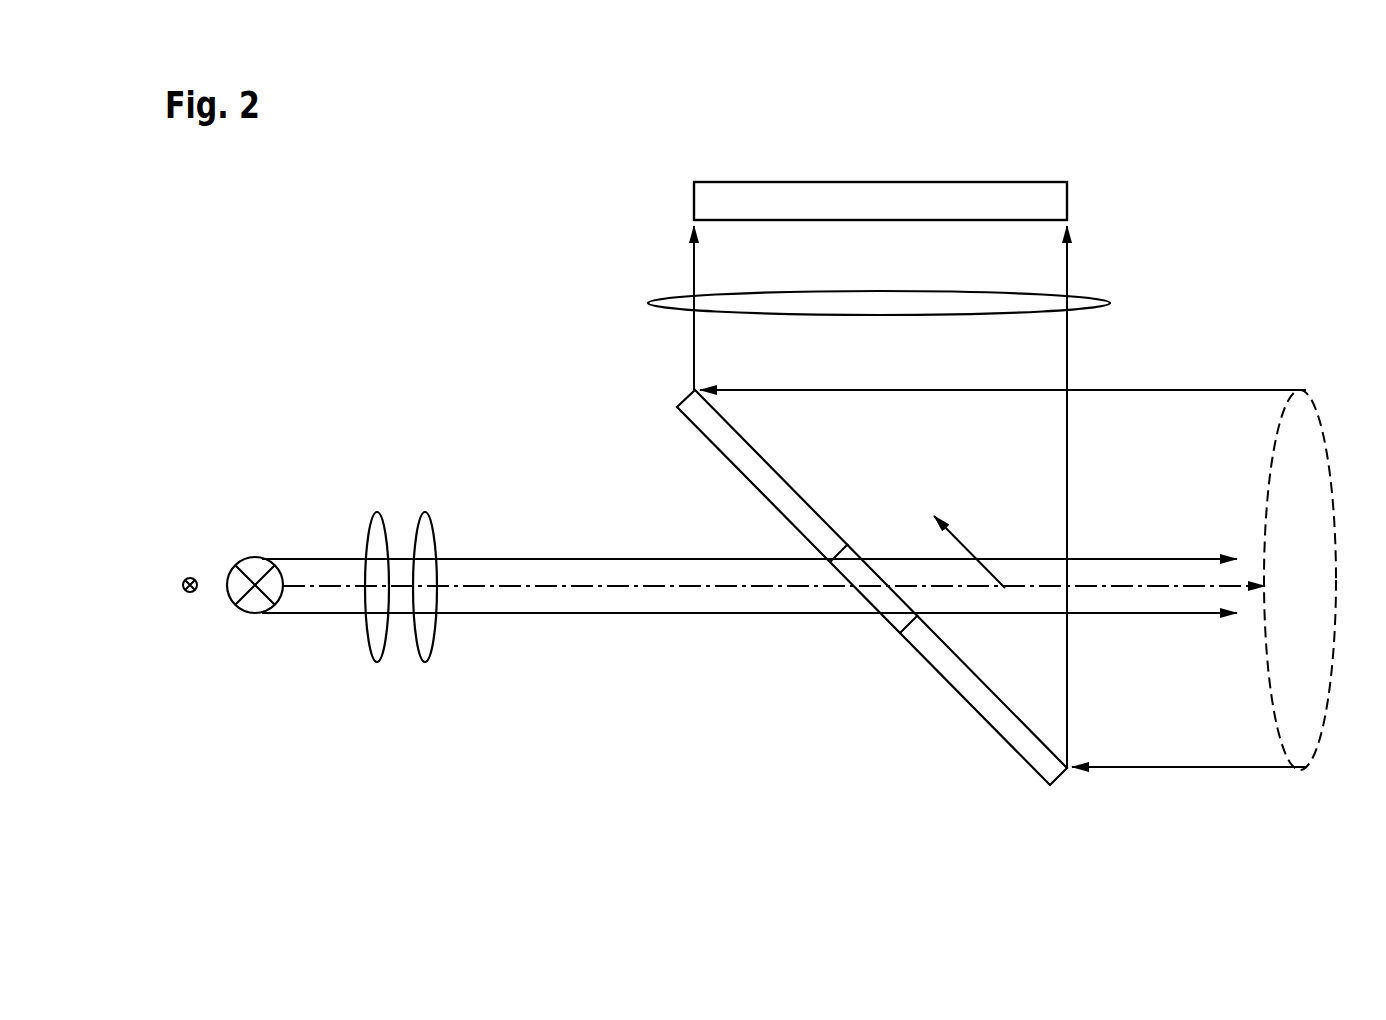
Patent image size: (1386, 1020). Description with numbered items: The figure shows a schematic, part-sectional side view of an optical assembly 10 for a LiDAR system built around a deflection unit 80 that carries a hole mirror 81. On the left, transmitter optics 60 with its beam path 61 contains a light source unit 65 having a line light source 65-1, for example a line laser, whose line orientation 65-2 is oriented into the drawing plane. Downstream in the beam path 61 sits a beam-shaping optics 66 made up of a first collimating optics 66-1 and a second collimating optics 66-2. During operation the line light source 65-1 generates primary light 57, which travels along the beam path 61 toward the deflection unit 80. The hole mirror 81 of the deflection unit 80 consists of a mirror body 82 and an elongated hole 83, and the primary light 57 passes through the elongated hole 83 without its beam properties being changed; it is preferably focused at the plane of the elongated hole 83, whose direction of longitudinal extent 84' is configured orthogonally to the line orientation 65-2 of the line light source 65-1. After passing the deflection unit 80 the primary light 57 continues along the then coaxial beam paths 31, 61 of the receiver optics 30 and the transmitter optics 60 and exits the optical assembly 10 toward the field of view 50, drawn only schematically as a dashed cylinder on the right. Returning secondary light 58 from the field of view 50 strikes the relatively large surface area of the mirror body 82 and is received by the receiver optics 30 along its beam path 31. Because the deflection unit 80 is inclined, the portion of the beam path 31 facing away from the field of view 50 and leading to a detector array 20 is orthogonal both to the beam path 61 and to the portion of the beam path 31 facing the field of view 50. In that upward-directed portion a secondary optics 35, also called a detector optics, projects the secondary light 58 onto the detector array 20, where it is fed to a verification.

The optical assembly 10 is at (300, 230).
The detector array 20 is at (1070, 196).
The receiver optics 30 is at (661, 260).
The beam path 31 is at (661, 352).
The secondary optics 35 is at (1110, 303).
The field of view 50 is at (1312, 395).
The primary light 57 is at (318, 558).
The secondary light 58 is at (1067, 264).
The transmitter optics 60 is at (360, 355).
The beam path 61 is at (525, 645).
The light source unit 65 is at (226, 565).
The line light source 65-1 is at (255, 615).
The line orientation 65-2 is at (190, 593).
The beam-shaping optics 66 is at (396, 521).
The first collimating optics 66-1 is at (375, 512).
The second collimating optics 66-2 is at (430, 550).
The deflection unit 80 is at (872, 587).
The hole mirror 81 is at (842, 500).
The mirror body 82 is at (773, 485).
The elongated hole 83 is at (853, 565).
The direction of longitudinal extent 84' is at (989, 543).